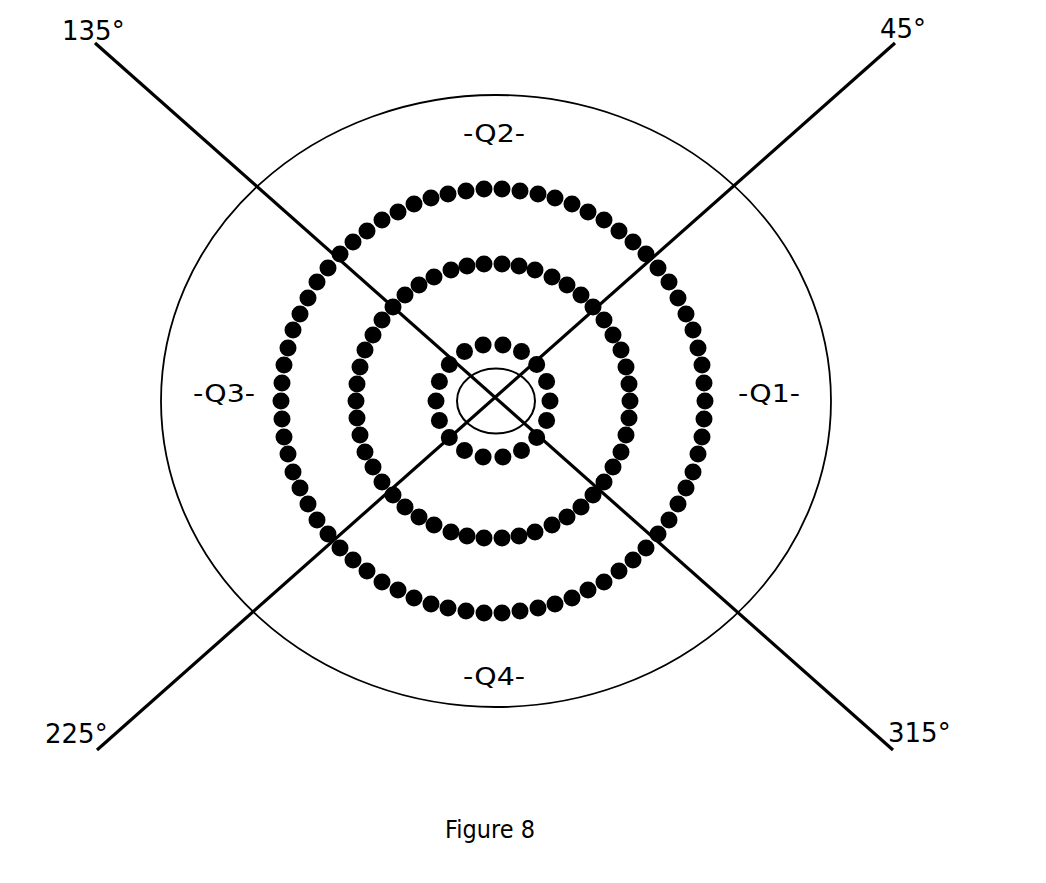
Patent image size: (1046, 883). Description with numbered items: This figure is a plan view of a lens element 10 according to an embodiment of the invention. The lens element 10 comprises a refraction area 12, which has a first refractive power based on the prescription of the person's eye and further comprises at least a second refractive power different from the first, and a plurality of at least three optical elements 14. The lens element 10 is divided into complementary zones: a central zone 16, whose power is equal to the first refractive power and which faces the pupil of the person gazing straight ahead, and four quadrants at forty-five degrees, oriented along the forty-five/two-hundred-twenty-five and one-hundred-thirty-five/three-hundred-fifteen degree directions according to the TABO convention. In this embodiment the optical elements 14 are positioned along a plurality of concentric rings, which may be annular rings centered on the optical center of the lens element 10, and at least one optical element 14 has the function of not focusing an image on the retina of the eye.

The lens element 10 is at (186, 242).
The refraction area 12 is at (495, 383).
The optical elements 14 is at (633, 358).
The central zone 16 is at (437, 400).